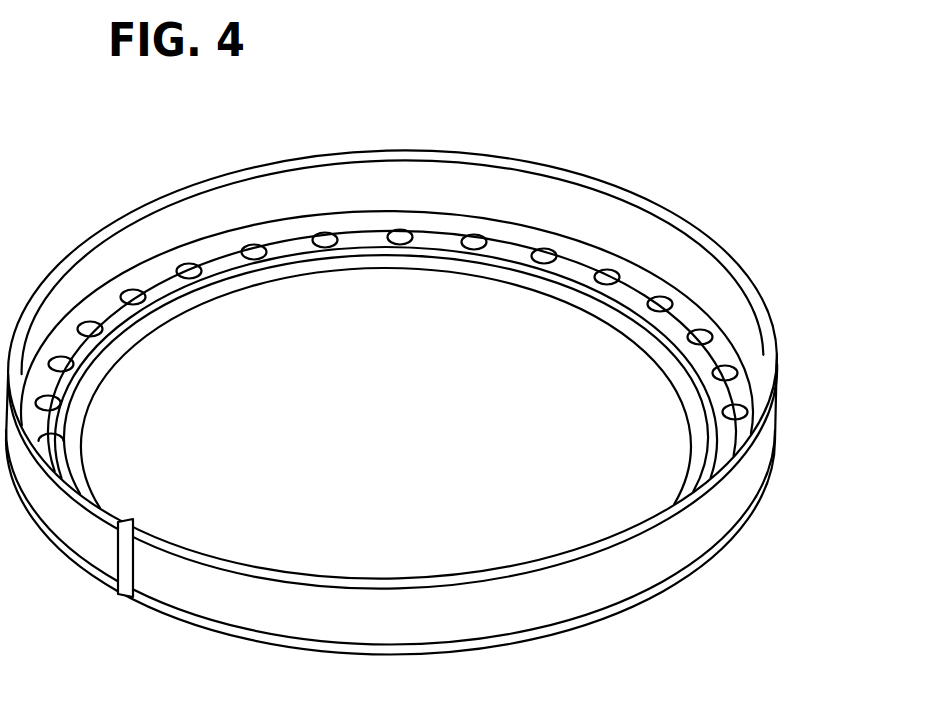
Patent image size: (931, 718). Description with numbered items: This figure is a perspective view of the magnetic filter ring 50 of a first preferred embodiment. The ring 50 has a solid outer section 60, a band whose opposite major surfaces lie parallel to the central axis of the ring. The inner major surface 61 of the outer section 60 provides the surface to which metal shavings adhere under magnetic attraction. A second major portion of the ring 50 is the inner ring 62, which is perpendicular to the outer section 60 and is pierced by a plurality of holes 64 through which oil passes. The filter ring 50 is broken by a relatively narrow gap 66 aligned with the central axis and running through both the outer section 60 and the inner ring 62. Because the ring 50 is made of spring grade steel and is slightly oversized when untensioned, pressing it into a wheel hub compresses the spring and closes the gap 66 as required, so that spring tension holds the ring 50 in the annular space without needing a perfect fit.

The magnetic filter ring 50 is at (634, 132).
The outer section 60 is at (722, 267).
The inner major surface 61 is at (549, 217).
The inner ring 62 is at (616, 306).
The holes 64 is at (472, 243).
The gap 66 is at (133, 533).